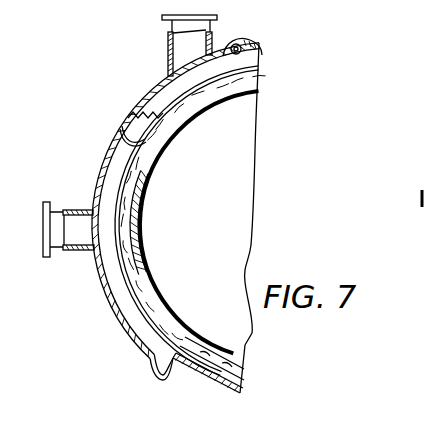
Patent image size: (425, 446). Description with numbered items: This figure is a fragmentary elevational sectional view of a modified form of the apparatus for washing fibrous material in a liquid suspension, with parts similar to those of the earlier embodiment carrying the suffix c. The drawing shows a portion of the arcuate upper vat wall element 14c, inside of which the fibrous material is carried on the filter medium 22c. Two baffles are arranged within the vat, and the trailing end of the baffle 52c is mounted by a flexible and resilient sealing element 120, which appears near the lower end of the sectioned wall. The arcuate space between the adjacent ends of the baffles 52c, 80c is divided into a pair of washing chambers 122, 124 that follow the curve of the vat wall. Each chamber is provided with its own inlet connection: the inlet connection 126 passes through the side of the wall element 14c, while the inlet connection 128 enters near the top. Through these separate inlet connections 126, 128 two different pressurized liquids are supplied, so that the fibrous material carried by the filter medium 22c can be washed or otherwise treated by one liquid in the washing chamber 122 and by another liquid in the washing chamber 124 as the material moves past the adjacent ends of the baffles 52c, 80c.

The upper vat wall element 14c is at (98, 295).
The filter medium 22c is at (145, 283).
The baffle 52c is at (217, 380).
The baffle 80c is at (253, 52).
The sealing element 120 is at (152, 362).
The washing chamber 122 is at (137, 325).
The washing chamber 124 is at (183, 90).
The inlet connection 126 is at (78, 218).
The inlet connection 128 is at (185, 42).